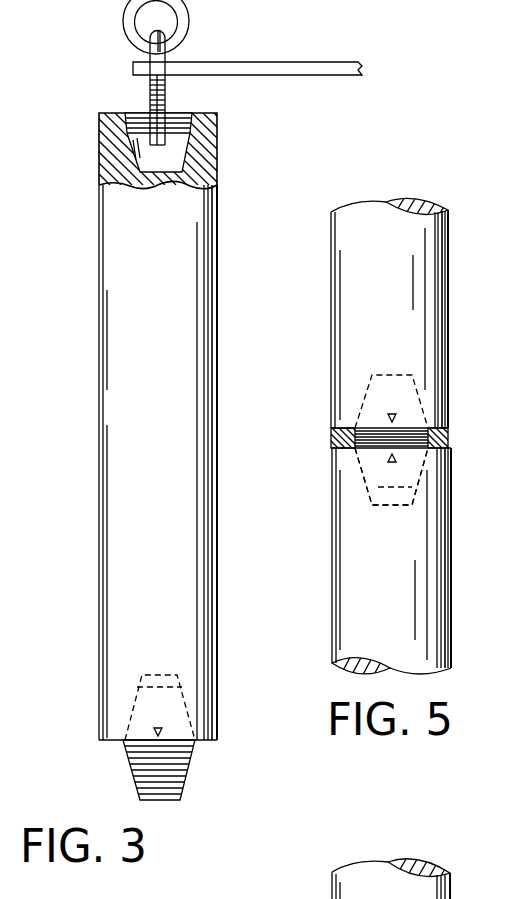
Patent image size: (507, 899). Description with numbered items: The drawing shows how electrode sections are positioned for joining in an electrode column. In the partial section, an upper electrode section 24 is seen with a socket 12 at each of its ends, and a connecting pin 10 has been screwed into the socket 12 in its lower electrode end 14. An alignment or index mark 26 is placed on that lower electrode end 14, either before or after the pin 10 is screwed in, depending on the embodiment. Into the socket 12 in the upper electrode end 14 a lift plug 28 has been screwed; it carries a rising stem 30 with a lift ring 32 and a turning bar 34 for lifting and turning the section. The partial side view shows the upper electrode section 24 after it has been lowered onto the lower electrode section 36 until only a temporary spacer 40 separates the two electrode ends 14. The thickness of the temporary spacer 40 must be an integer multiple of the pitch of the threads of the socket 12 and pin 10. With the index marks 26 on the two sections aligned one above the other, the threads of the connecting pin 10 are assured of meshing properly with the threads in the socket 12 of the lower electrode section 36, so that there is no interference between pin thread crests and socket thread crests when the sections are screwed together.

In FIG. 3, the connecting pin 10 is at (190, 765).
In FIG. 5, the connecting pin 10 is at (386, 490).
In FIG. 3, the socket 12 is at (213, 160).
In FIG. 5, the socket 12 is at (415, 375).
In FIG. 3, the electrode end 14 is at (218, 728).
In FIG. 5, the electrode end 14 is at (448, 410).
In FIG. 3, the upper electrode section 24 is at (217, 380).
In FIG. 5, the upper electrode section 24 is at (448, 240).
In FIG. 3, the index mark 26 is at (138, 737).
In FIG. 5, the index mark 26 is at (385, 413).
In FIG. 3, the lift plug 28 is at (182, 113).
In FIG. 3, the rising stem 30 is at (150, 97).
In FIG. 3, the lift ring 32 is at (190, 16).
In FIG. 3, the turning bar 34 is at (240, 62).
In FIG. 5, the lower electrode section 36 is at (452, 605).
In FIG. 5, the temporary spacer 40 is at (450, 438).